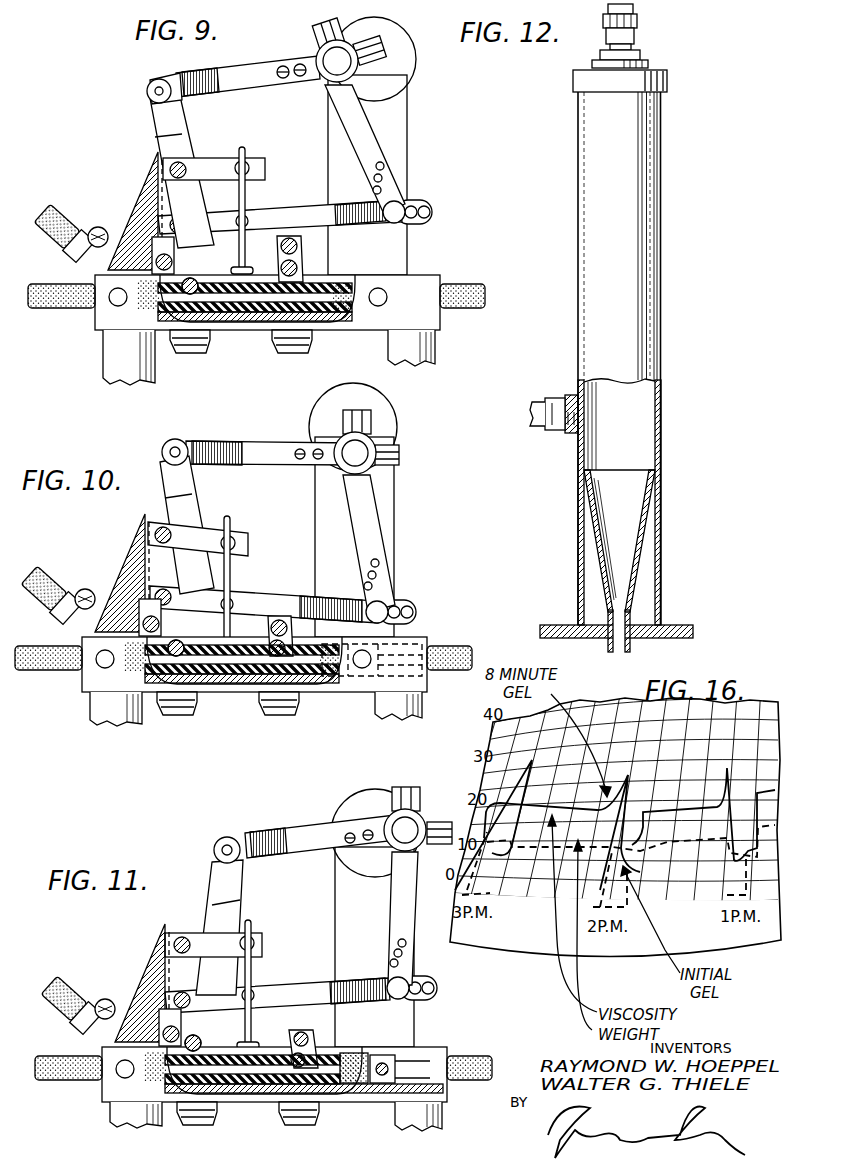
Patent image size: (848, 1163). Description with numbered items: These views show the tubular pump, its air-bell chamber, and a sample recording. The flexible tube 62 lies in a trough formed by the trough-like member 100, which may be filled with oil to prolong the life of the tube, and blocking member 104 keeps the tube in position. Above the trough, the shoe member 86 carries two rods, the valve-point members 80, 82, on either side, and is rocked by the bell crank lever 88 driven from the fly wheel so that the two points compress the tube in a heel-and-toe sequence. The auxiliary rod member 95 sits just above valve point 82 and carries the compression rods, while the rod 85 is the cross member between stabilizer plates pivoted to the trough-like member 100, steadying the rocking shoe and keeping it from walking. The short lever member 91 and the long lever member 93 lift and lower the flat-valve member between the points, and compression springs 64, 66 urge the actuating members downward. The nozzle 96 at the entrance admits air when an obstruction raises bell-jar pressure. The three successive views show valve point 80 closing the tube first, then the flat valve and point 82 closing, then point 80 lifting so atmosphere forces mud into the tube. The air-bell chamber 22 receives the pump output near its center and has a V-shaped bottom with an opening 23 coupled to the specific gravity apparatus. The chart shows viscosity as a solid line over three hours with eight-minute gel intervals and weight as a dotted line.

In FIG. 12, the air-bell chamber 22 is at (592, 145).
In FIG. 12, the opening 23 is at (607, 643).
In FIG. 9, the tube 62 is at (248, 312).
In FIG. 10, the tube 62 is at (235, 676).
In FIG. 11, the tube 62 is at (250, 1094).
In FIG. 9, the compression spring 64 is at (190, 354).
In FIG. 10, the compression spring 64 is at (170, 716).
In FIG. 11, the compression spring 64 is at (192, 1126).
In FIG. 9, the compression spring 66 is at (312, 346).
In FIG. 10, the compression spring 66 is at (278, 716).
In FIG. 11, the compression spring 66 is at (302, 1126).
In FIG. 9, the valve-point member 80 is at (190, 278).
In FIG. 10, the valve-point member 80 is at (183, 636).
In FIG. 11, the valve-point member 80 is at (205, 1032).
In FIG. 9, the valve-point member 82 is at (302, 268).
In FIG. 10, the valve-point member 82 is at (270, 648).
In FIG. 11, the valve-point member 82 is at (292, 1054).
In FIG. 9, the rod 85 is at (135, 226).
In FIG. 10, the rod 85 is at (122, 595).
In FIG. 11, the rod 85 is at (128, 1010).
In FIG. 9, the shoe member 86 is at (160, 120).
In FIG. 10, the shoe member 86 is at (185, 490).
In FIG. 11, the shoe member 86 is at (230, 884).
In FIG. 9, the bell crank lever 88 is at (264, 78).
In FIG. 10, the bell crank lever 88 is at (272, 447).
In FIG. 11, the bell crank lever 88 is at (308, 835).
In FIG. 9, the short lever member 91 is at (218, 168).
In FIG. 10, the short lever member 91 is at (250, 540).
In FIG. 11, the short lever member 91 is at (265, 938).
In FIG. 9, the long lever member 93 is at (290, 208).
In FIG. 10, the long lever member 93 is at (270, 598).
In FIG. 11, the long lever member 93 is at (289, 991).
In FIG. 9, the auxiliary rod member 95 is at (302, 246).
In FIG. 10, the auxiliary rod member 95 is at (292, 612).
In FIG. 11, the auxiliary rod member 95 is at (313, 1030).
In FIG. 9, the nozzle 96 is at (65, 222).
In FIG. 10, the nozzle 96 is at (60, 585).
In FIG. 11, the nozzle 96 is at (62, 993).
In FIG. 9, the trough-like member 100 is at (428, 277).
In FIG. 10, the trough-like member 100 is at (418, 638).
In FIG. 11, the trough-like member 100 is at (381, 1092).
In FIG. 10, the blocking member 104 is at (365, 675).
In FIG. 11, the blocking member 104 is at (377, 1053).